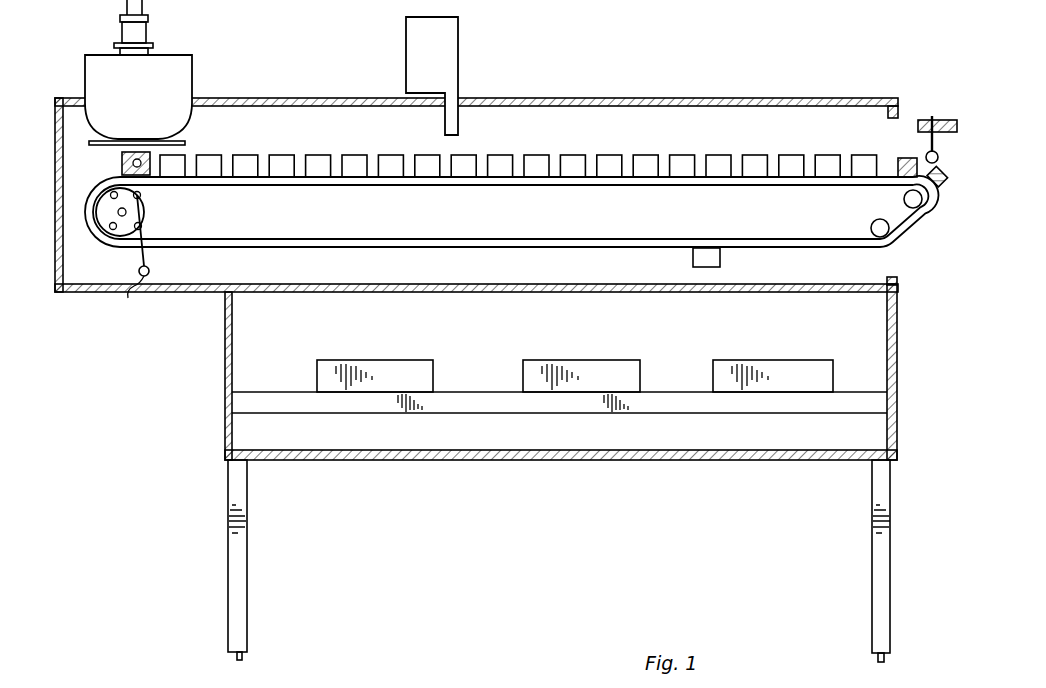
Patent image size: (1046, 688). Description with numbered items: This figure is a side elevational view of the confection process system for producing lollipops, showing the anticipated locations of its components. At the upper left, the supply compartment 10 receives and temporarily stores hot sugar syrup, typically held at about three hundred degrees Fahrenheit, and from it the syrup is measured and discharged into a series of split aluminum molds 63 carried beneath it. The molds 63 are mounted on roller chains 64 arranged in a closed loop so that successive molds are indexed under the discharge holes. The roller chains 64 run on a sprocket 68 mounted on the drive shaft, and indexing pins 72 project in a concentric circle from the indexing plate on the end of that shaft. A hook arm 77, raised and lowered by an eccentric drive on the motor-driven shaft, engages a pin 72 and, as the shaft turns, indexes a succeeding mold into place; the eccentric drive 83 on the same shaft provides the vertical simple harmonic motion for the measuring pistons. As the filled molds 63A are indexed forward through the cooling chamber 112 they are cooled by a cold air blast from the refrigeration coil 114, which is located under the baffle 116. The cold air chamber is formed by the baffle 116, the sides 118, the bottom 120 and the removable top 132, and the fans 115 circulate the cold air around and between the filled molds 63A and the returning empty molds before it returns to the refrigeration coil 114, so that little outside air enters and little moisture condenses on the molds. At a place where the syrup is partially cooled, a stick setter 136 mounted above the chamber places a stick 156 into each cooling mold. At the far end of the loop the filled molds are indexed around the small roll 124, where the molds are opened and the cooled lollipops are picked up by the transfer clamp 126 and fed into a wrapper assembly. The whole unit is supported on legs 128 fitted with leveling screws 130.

The supply compartment 10 is at (192, 76).
The split aluminum molds 63 is at (297, 153).
The filled molds 63A is at (720, 255).
The roller chains 64 is at (512, 232).
The sprocket 68 is at (148, 208).
The indexing pins 72 is at (114, 238).
The hook arm 77 is at (150, 262).
The eccentric drive 83 is at (132, 302).
The cooling chamber 112 is at (408, 132).
The refrigeration coil 114 is at (481, 413).
The fans 115 is at (401, 360).
The baffle 116 is at (566, 295).
The sides 118 is at (225, 345).
The bottom 120 is at (620, 462).
The small roll 124 is at (919, 220).
The transfer clamp 126 is at (943, 117).
The legs 128 is at (247, 520).
The leveling screws 130 is at (243, 658).
The removable top 132 is at (718, 98).
The stick setter 136 is at (458, 37).
The stick 156 is at (928, 118).